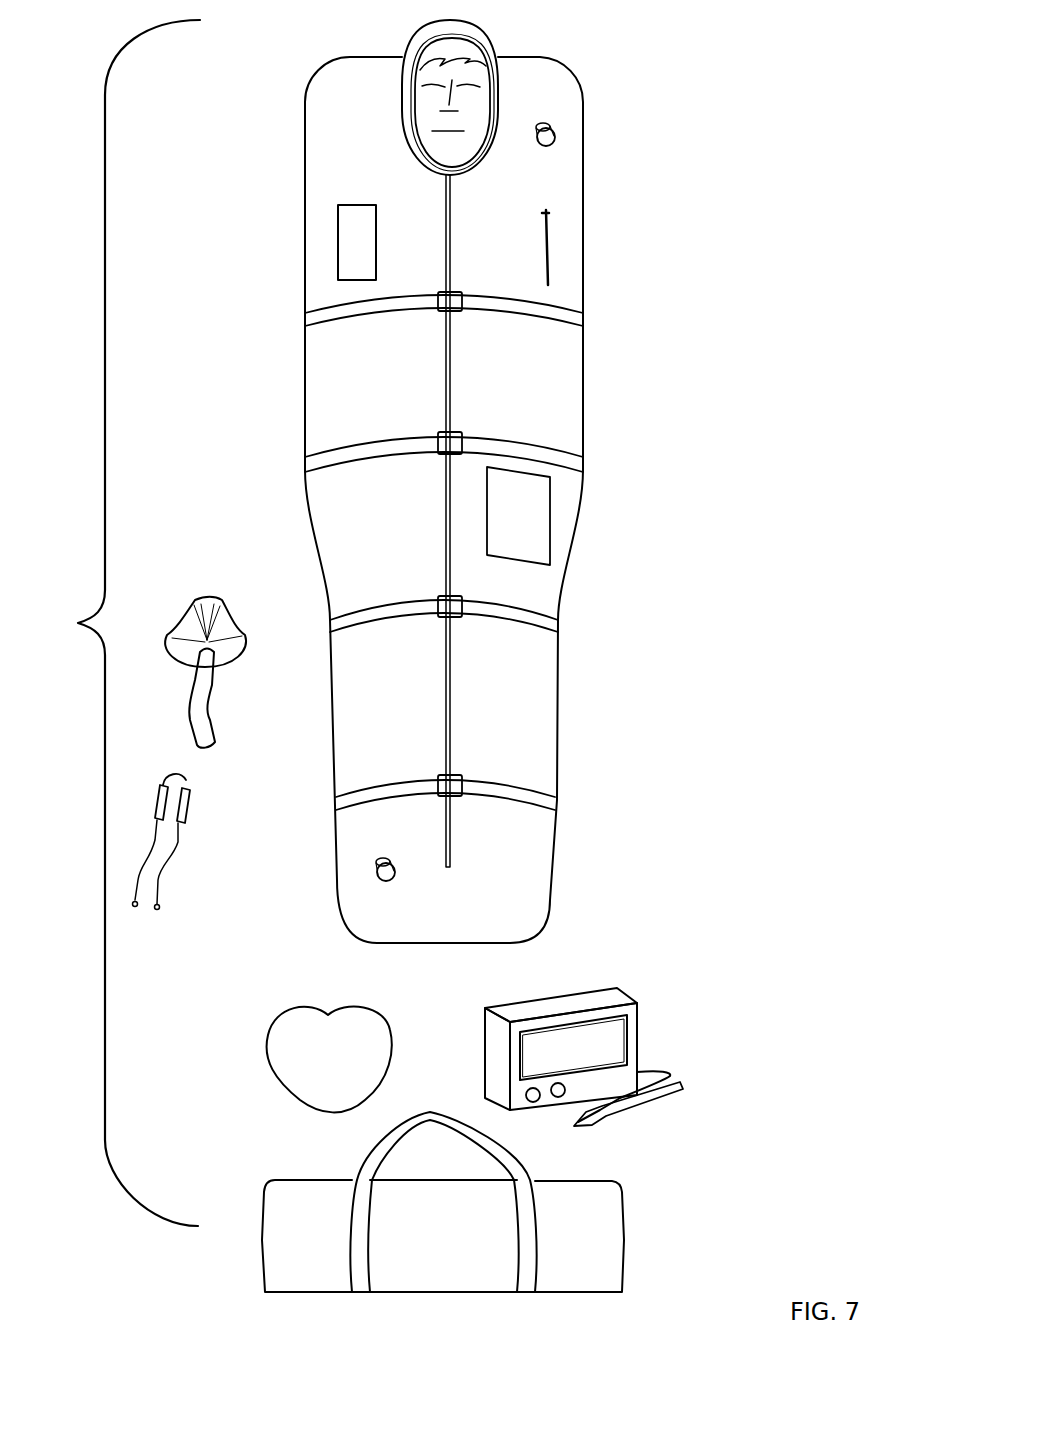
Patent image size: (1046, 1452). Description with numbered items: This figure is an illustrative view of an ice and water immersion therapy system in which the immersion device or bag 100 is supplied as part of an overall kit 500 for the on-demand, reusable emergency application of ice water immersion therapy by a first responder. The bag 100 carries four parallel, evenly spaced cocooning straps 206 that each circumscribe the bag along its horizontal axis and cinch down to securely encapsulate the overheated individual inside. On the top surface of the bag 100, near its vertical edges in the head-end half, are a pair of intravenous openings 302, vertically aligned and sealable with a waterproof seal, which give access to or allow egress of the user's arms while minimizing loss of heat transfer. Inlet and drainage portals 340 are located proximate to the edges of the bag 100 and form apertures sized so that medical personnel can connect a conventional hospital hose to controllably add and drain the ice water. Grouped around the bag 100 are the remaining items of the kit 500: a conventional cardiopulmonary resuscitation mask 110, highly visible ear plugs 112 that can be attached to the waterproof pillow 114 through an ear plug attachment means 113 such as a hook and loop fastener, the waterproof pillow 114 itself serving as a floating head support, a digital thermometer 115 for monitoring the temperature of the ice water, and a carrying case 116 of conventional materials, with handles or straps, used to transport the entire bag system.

The immersion device 100 is at (635, 168).
The cardiopulmonary resuscitation mask 110 is at (206, 583).
The ear plugs 112 is at (192, 852).
The ear plug attachment means 113 is at (186, 780).
The waterproof pillow 114 is at (283, 1050).
The digital thermometer 115 is at (582, 1000).
The carrying case 116 is at (612, 1195).
The cocooning straps 206 is at (315, 457).
The intravenous opening 302 is at (340, 228).
The inlet and drainage portals 340 is at (552, 121).
The kit 500 is at (78, 623).